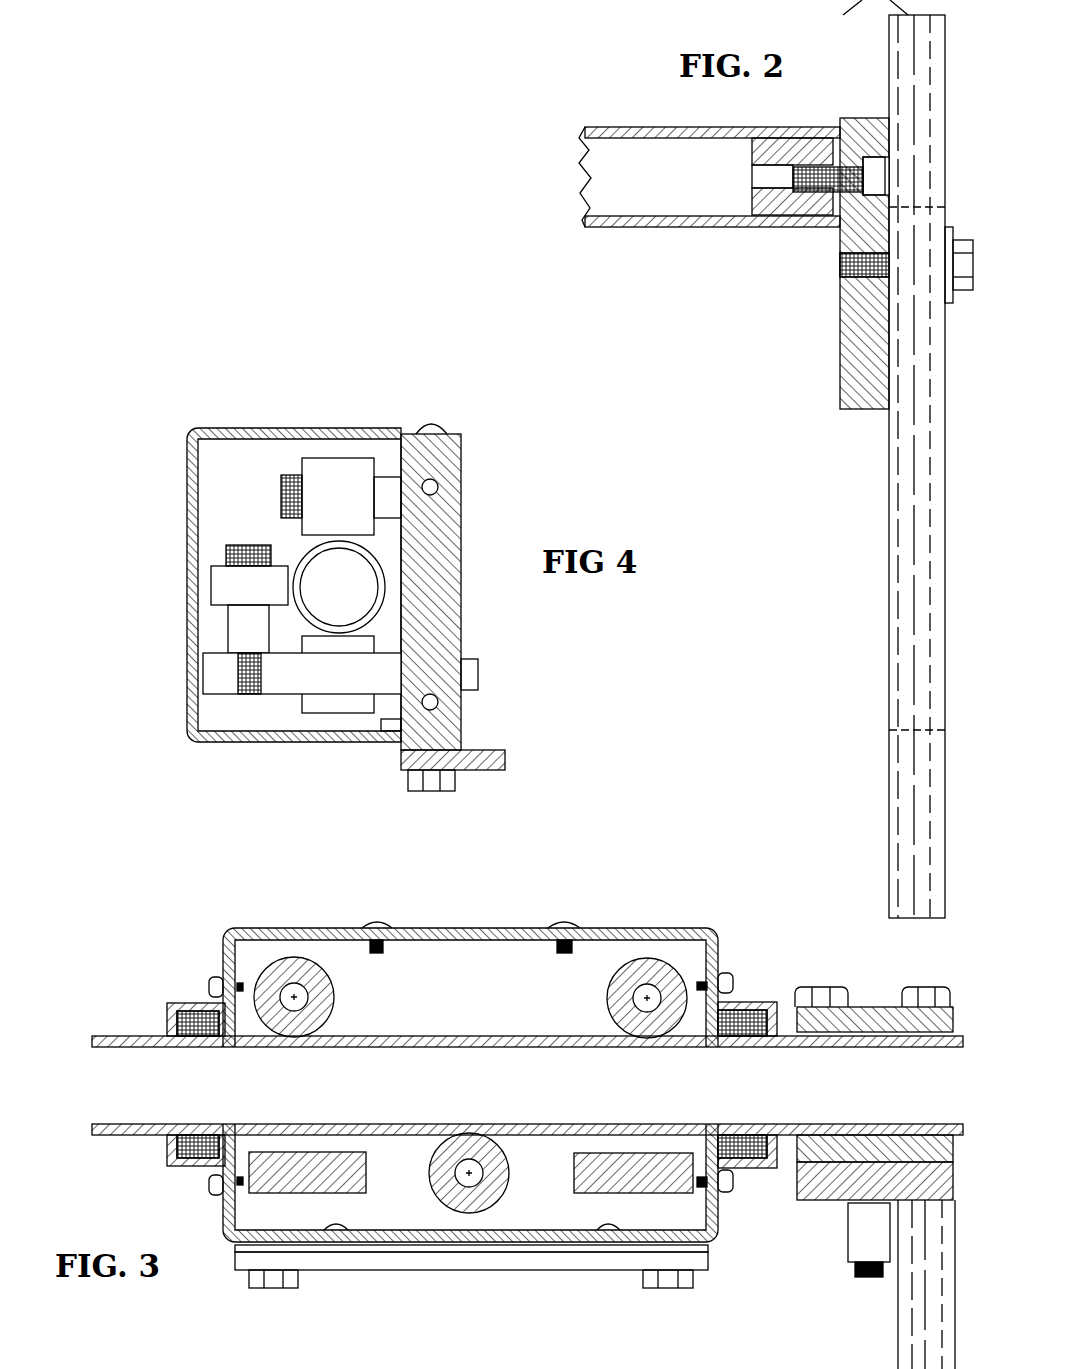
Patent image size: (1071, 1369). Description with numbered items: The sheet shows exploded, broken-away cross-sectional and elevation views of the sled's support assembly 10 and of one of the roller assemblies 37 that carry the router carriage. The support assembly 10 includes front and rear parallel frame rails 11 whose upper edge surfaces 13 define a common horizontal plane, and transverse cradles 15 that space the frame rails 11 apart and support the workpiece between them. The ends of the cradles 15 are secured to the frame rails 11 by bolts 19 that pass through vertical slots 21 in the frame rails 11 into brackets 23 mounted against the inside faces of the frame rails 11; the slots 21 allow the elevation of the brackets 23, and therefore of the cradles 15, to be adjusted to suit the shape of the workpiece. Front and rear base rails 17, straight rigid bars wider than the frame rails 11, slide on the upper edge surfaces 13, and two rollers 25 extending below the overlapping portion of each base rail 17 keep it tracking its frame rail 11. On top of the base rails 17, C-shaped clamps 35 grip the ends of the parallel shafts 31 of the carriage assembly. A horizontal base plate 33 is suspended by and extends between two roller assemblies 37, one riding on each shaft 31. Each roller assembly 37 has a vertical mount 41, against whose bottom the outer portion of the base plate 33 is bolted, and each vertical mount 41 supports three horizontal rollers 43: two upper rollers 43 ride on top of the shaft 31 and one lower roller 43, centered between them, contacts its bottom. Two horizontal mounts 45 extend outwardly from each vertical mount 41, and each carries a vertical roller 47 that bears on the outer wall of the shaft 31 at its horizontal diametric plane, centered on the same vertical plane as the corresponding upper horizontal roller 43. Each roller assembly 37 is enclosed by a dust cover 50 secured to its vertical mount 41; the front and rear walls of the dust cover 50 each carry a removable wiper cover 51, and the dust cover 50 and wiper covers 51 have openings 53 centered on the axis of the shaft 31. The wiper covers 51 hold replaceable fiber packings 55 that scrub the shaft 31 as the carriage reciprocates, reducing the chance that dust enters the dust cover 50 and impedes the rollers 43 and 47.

In FIG. 2, the support assembly 10 is at (776, 459).
In FIG. 3, the support assembly 10 is at (824, 1152).
In FIG. 2, the frame rails 11 is at (889, 597).
In FIG. 3, the frame rails 11 is at (898, 1297).
In FIG. 2, the upper edge surfaces 13 is at (860, 20).
In FIG. 2, the cradles 15 is at (680, 227).
In FIG. 3, the base rails 17 is at (830, 1203).
In FIG. 2, the bolts 19 is at (840, 260).
In FIG. 2, the vertical slots 21 is at (913, 728).
In FIG. 2, the brackets 23 is at (838, 338).
In FIG. 3, the rollers 25 is at (848, 1245).
In FIG. 4, the shafts 31 is at (381, 605).
In FIG. 3, the shafts 31 is at (131, 1036).
In FIG. 4, the base plate 33 is at (494, 748).
In FIG. 3, the base plate 33 is at (495, 1263).
In FIG. 3, the C-shaped clamps 35 is at (883, 1012).
In FIG. 4, the roller assemblies 37 is at (334, 566).
In FIG. 3, the roller assemblies 37 is at (522, 1083).
In FIG. 4, the vertical mount 41 is at (461, 498).
In FIG. 3, the vertical mount 41 is at (417, 1246).
In FIG. 4, the horizontal rollers 43 is at (302, 467).
In FIG. 3, the horizontal rollers 43 is at (334, 992).
In FIG. 4, the horizontal mounts 45 is at (273, 698).
In FIG. 3, the horizontal mounts 45 is at (306, 1193).
In FIG. 4, the vertical roller 47 is at (211, 580).
In FIG. 4, the dust cover 50 is at (313, 430).
In FIG. 3, the dust cover 50 is at (470, 928).
In FIG. 3, the wiper cover 51 is at (193, 1003).
In FIG. 3, the openings 53 is at (233, 1034).
In FIG. 3, the fiber packings 55 is at (193, 1169).